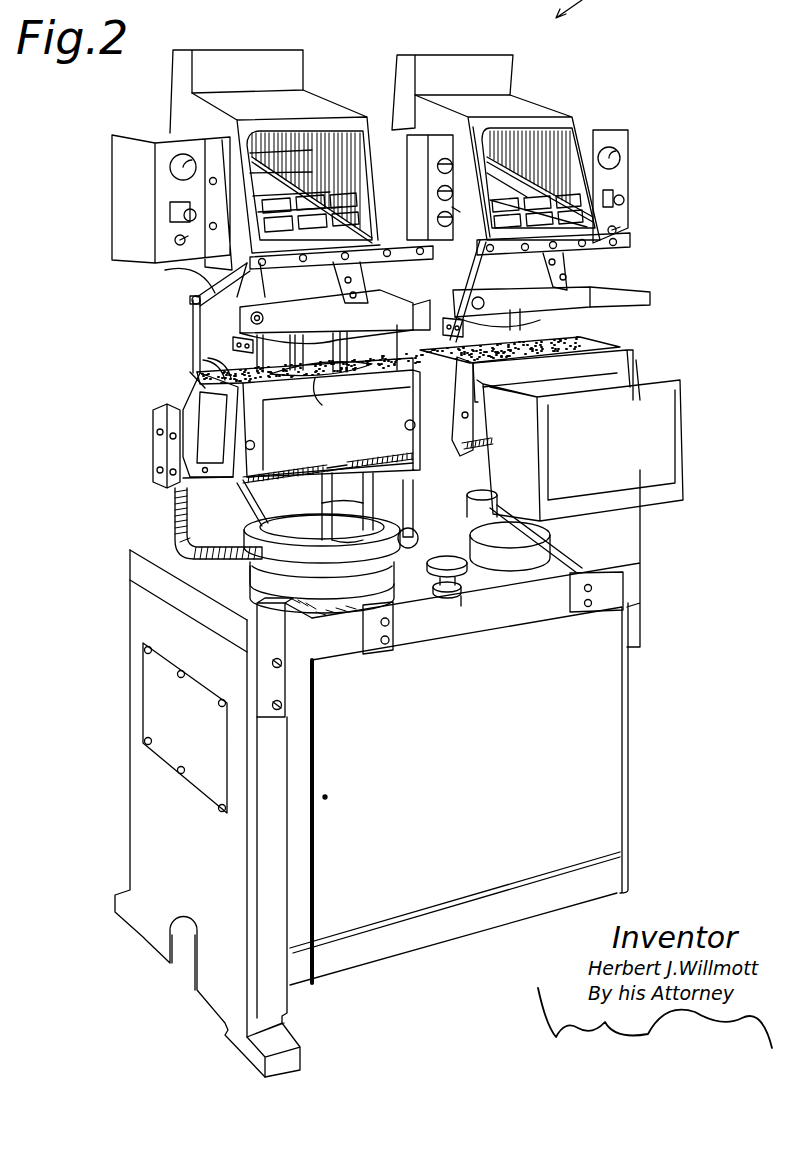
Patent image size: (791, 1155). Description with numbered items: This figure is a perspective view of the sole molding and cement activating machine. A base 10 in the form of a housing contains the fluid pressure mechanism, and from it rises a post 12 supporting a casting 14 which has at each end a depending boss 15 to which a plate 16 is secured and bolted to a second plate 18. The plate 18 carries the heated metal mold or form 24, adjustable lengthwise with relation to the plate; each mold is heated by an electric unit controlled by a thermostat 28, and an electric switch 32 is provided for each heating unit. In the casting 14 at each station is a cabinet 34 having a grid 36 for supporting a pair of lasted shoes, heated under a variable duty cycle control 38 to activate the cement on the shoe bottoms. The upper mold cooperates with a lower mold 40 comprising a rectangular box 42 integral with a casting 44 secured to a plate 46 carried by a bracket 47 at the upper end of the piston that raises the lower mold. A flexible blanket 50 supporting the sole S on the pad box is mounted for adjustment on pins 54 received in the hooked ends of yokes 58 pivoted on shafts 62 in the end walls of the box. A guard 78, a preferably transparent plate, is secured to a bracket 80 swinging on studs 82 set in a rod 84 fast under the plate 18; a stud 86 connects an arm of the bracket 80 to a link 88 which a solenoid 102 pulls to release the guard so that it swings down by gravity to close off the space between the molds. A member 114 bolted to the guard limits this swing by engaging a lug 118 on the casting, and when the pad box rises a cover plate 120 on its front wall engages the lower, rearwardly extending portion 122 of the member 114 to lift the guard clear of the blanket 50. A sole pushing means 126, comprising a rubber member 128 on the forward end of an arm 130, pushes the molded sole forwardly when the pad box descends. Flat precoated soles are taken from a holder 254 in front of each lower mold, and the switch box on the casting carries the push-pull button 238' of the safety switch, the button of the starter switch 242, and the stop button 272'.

The base 10 is at (612, 711).
The post 12 is at (448, 498).
The casting 14 is at (404, 166).
The depending boss 15 is at (308, 356).
The plate 16 is at (280, 352).
The second plate 18 is at (312, 318).
The metal mold or form 24 is at (578, 307).
The thermostat 28 is at (172, 209).
The electric switch 32 is at (180, 241).
The cabinet 34 is at (320, 138).
The grid 36 is at (320, 210).
The variable duty cycle control 38 is at (183, 165).
The lower mold 40 is at (180, 382).
The rectangular box 42 is at (233, 490).
The casting 44 is at (252, 500).
The plate 46 is at (254, 561).
The bracket 47 is at (264, 581).
The flexible blanket 50 is at (387, 363).
The pins 54 is at (210, 425).
The yokes 58 is at (195, 397).
The shafts 62 is at (408, 421).
The guard 78 is at (640, 273).
The bracket 80 is at (190, 301).
The studs 82 is at (220, 296).
The rod 84 is at (223, 296).
The stud 86 is at (243, 301).
The link 88 is at (200, 307).
The solenoid 102 is at (155, 456).
The member 114 is at (355, 266).
The lug 118 is at (521, 307).
The cover plate 120 is at (277, 403).
The lower, rearwardly extending portion 122 is at (348, 300).
The sole pushing means 126 is at (204, 354).
The member 128 is at (225, 391).
The arm 130 is at (205, 363).
The push-pull button 238' is at (463, 144).
The starter switch 242 is at (440, 190).
The holder 254 is at (655, 506).
The stop button 272' is at (516, 136).